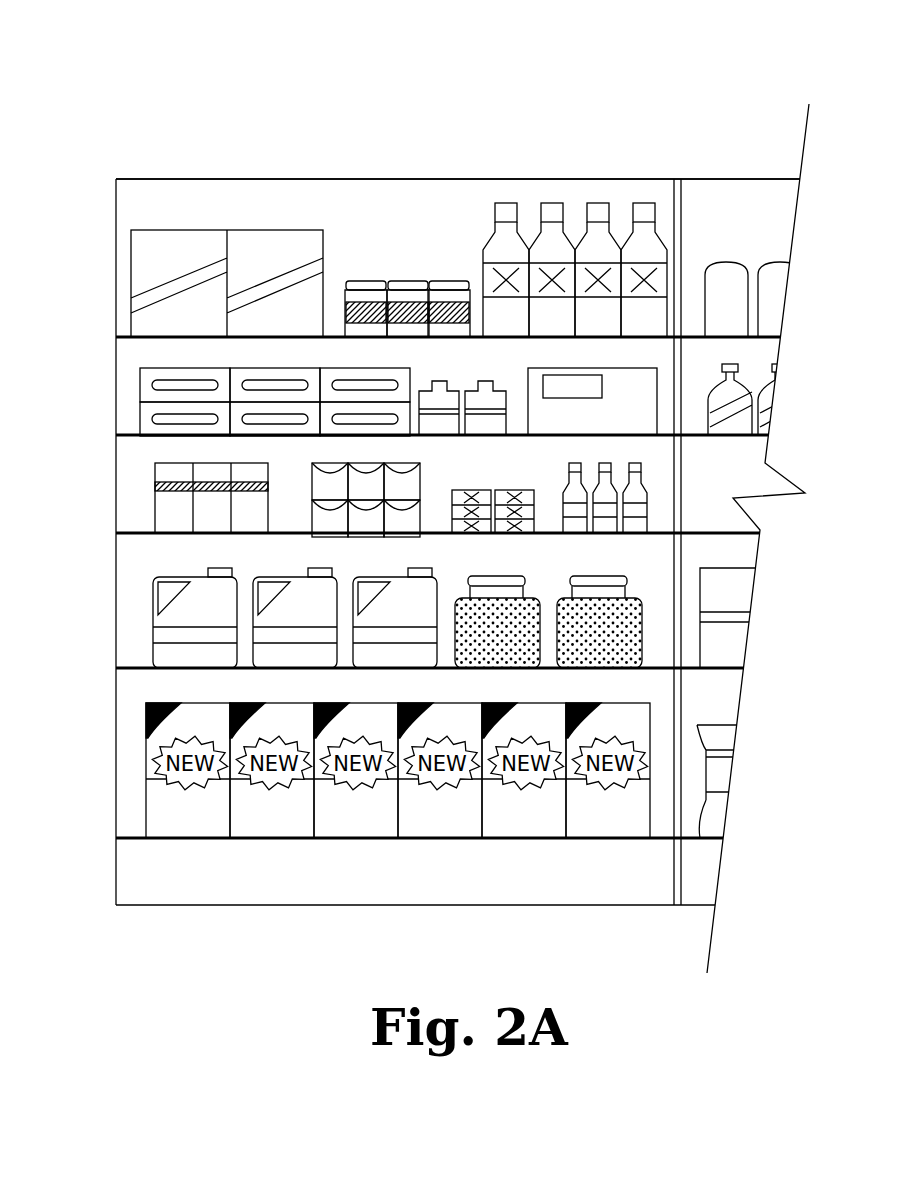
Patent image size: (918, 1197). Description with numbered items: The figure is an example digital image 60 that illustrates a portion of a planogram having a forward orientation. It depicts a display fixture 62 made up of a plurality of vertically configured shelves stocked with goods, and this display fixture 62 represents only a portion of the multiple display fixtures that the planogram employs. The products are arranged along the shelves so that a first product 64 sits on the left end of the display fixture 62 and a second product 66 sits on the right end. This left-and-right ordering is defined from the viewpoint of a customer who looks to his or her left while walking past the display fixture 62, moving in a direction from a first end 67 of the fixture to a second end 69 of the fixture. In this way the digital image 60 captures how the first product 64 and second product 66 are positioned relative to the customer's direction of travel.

The digital image 60 is at (730, 80).
The display fixture 62 is at (385, 178).
The first product 64 is at (218, 205).
The second product 66 is at (577, 203).
The first end 67 is at (116, 213).
The second end 69 is at (678, 202).